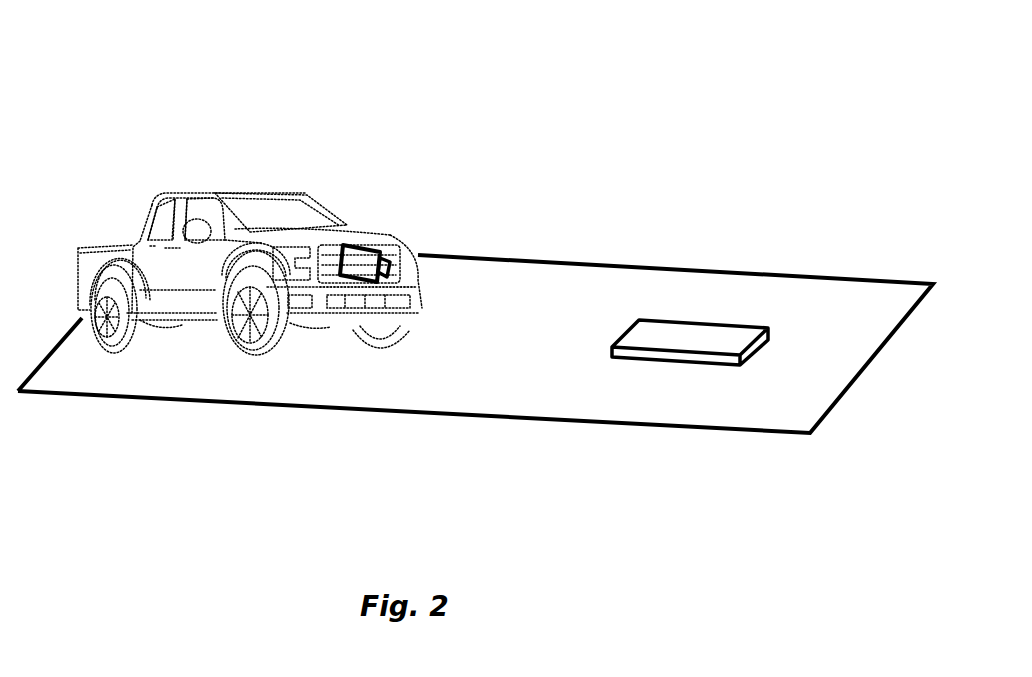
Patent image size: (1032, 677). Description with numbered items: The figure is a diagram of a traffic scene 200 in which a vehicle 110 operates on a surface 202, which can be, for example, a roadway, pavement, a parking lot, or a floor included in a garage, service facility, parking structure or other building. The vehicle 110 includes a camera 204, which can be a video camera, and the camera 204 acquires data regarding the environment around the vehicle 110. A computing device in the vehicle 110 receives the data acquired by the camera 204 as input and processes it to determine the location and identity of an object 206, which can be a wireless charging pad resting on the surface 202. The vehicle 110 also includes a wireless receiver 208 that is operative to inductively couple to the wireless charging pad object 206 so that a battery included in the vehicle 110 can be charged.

The traffic scene 200 is at (509, 44).
The vehicle 110 is at (146, 218).
The surface 202 is at (393, 257).
The camera 204 is at (290, 408).
The object 206 is at (632, 321).
The wireless receiver 208 is at (332, 325).